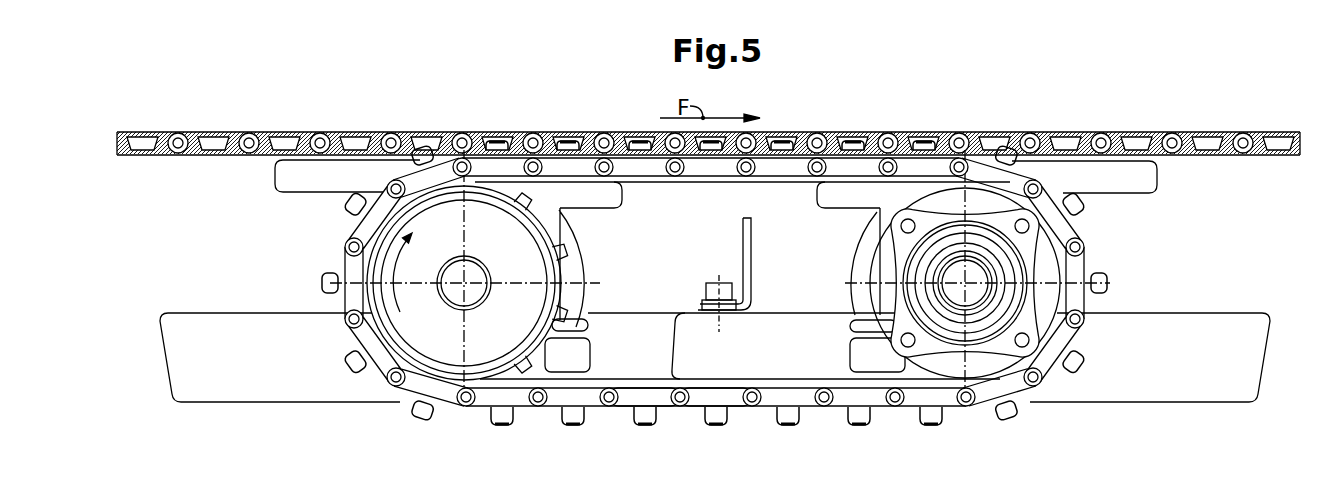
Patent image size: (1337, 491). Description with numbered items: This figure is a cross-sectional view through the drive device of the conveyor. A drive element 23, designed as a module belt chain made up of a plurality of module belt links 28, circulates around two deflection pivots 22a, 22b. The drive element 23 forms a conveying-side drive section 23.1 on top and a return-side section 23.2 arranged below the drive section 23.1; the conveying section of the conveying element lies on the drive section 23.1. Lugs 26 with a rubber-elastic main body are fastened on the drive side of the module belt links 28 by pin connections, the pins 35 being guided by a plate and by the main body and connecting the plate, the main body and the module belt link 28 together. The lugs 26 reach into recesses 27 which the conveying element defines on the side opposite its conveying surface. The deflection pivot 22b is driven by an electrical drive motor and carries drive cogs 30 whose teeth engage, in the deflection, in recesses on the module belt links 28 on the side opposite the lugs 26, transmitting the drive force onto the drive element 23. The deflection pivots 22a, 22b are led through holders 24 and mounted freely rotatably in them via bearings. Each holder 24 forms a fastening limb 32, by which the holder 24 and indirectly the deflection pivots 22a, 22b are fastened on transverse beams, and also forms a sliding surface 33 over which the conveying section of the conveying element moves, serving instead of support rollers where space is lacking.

The deflection pivot 22a is at (457, 287).
The deflection pivot 22b is at (980, 292).
The drive element 23 is at (714, 281).
The conveying-side drive section 23.1 is at (563, 167).
The return-side section 23.2 is at (716, 439).
The holder 24 is at (228, 403).
The lug 26 is at (929, 150).
The recess 27 is at (288, 148).
The module belt link 28 is at (737, 399).
The drive cog 30 is at (873, 257).
The fastening limb 32 is at (185, 372).
The sliding surface 33 is at (318, 160).
The pin 35 is at (863, 425).